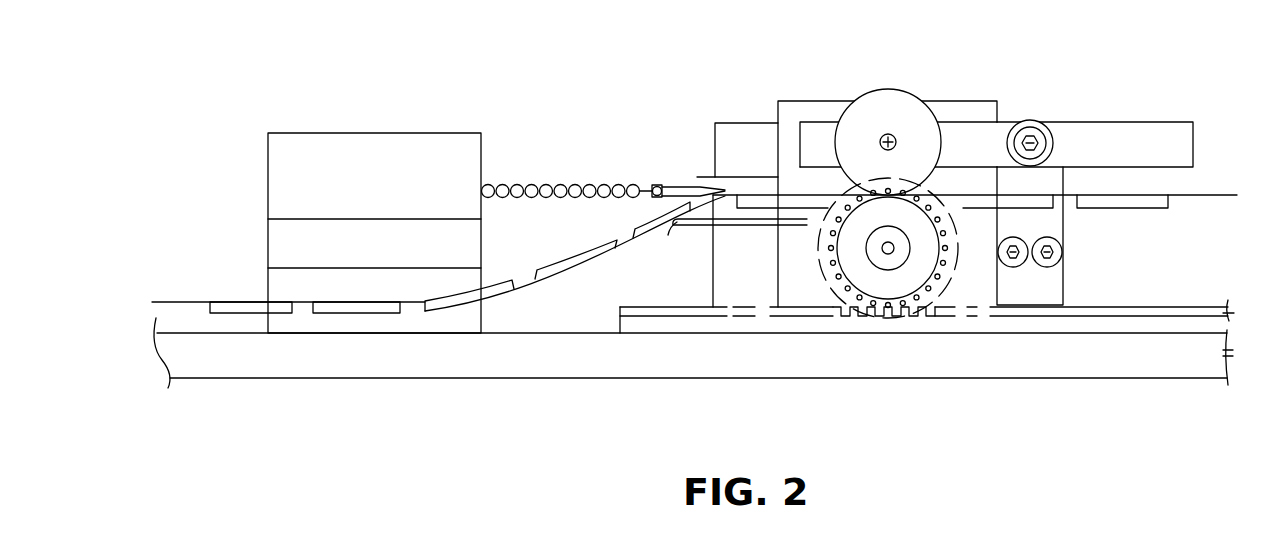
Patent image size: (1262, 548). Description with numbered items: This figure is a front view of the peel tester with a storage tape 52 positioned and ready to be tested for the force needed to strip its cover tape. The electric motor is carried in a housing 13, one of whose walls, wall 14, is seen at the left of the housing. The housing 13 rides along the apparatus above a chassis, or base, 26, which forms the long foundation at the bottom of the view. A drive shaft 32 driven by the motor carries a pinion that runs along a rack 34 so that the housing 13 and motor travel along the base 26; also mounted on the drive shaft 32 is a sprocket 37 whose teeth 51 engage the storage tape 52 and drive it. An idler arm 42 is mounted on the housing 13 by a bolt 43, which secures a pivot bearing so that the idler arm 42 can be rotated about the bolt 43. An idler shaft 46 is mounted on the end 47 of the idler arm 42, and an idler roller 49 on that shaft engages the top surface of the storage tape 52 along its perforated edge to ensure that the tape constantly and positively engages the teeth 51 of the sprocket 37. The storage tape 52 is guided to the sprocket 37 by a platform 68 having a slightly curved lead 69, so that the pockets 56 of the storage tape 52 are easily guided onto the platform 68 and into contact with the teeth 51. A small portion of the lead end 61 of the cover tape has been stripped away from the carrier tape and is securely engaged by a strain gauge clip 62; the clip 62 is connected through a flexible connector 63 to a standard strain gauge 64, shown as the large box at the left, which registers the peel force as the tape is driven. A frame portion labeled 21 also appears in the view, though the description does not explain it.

The housing 13 is at (756, 122).
The wall 14 is at (713, 148).
The roller frame 21 is at (972, 107).
The chassis 26 is at (1157, 365).
The drive shaft 32 is at (897, 258).
The rack 34 is at (1117, 323).
The sprocket 37 is at (880, 280).
The idler arm 42 is at (1113, 133).
The bolt 43 is at (1035, 130).
The idler shaft 46 is at (897, 133).
The end of idler arm 47 is at (812, 130).
The idler roller 49 is at (863, 115).
The teeth 51 is at (883, 300).
The storage tape 52 is at (190, 300).
The pocket 56 is at (238, 313).
The lead end 61 is at (726, 192).
The strain gauge clip 62 is at (680, 183).
The flexible connector 63 is at (530, 185).
The strain gauge 64 is at (402, 153).
The platform 68 is at (740, 227).
The curved lead 69 is at (657, 230).